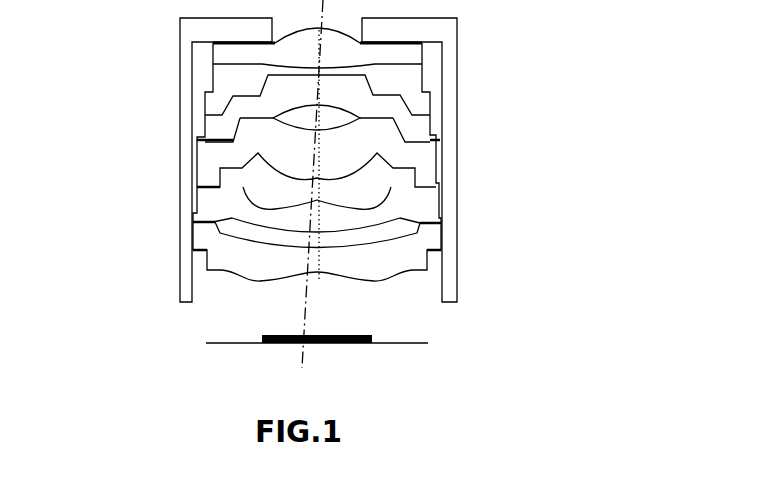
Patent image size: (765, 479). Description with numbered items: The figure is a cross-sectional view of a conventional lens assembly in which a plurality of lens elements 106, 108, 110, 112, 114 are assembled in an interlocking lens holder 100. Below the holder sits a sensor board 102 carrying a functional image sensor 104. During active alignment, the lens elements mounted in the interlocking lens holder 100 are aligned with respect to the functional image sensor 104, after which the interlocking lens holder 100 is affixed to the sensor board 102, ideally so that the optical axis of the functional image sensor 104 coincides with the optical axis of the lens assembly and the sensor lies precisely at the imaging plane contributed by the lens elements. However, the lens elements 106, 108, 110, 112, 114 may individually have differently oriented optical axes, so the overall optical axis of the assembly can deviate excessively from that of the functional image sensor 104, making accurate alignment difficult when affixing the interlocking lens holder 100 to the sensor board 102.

The interlocking lens holder 100 is at (450, 150).
The sensor board 102 is at (422, 340).
The functional image sensor 104 is at (287, 347).
The lens element 106 is at (230, 252).
The lens element 108 is at (230, 202).
The lens element 110 is at (210, 163).
The lens element 112 is at (222, 122).
The lens element 114 is at (227, 53).